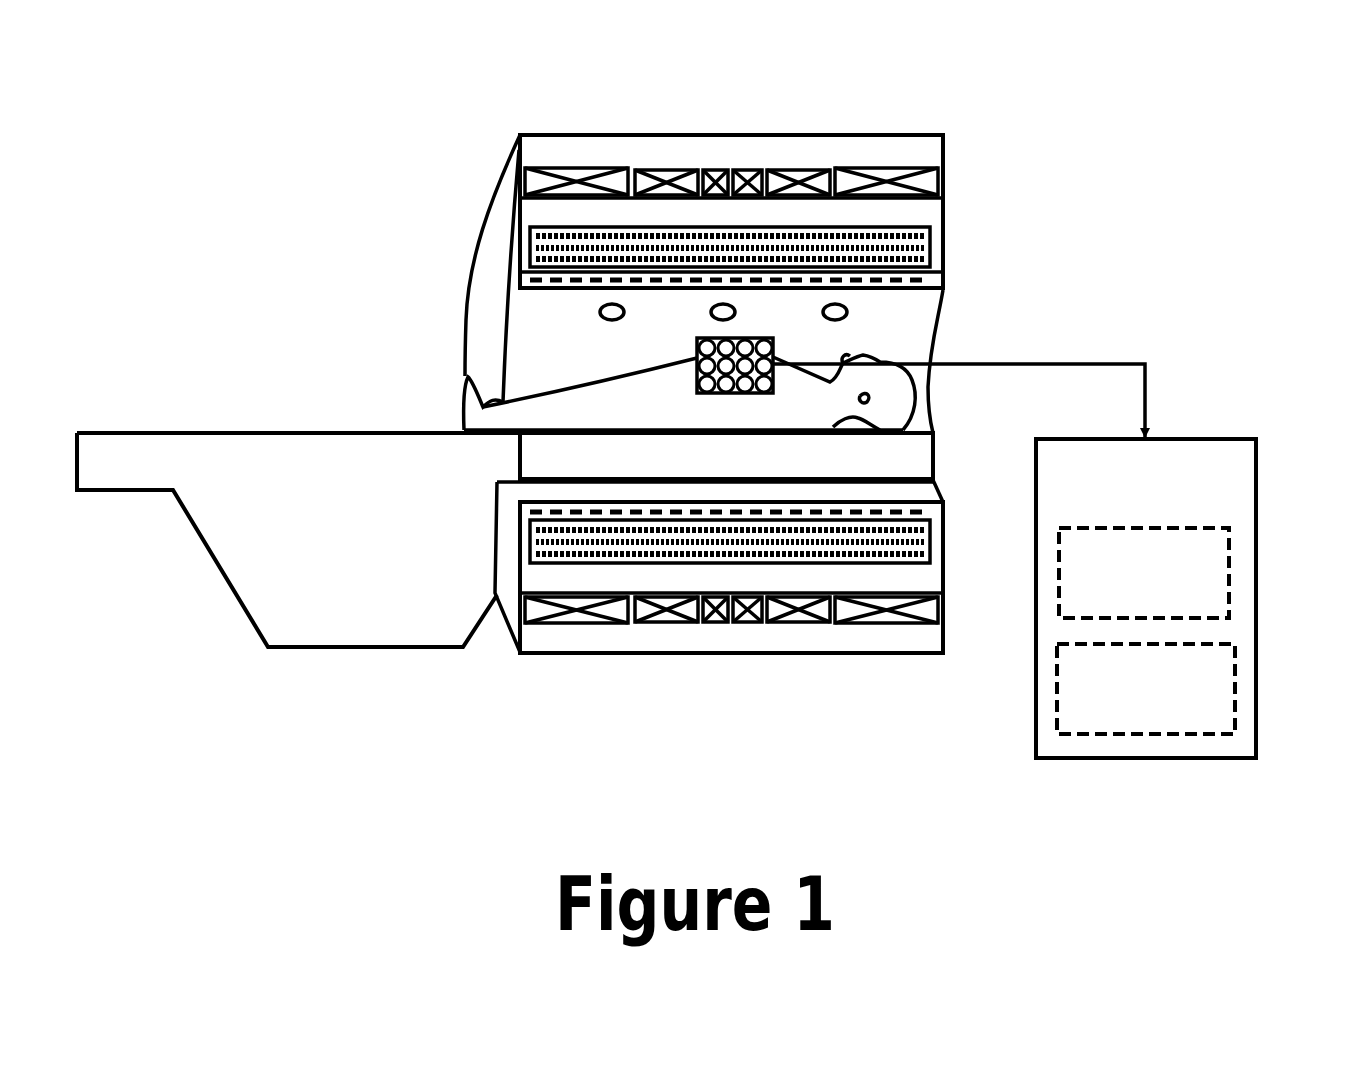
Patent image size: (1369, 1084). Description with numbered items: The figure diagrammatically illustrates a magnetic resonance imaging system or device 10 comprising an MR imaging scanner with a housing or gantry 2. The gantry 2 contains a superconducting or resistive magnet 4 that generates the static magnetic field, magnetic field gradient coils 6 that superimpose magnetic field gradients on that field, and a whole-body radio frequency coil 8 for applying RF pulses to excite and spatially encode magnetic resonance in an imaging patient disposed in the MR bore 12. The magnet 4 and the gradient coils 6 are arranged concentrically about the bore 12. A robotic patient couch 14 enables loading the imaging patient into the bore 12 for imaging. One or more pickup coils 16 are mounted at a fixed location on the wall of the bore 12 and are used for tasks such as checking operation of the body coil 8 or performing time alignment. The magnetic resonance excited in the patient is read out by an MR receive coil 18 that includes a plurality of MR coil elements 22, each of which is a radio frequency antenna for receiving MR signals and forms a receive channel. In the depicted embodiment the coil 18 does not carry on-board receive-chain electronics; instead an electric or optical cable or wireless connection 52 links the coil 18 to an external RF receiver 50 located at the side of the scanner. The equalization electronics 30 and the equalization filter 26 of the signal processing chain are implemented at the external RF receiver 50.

The housing or gantry 2 is at (893, 135).
The magnet 4 is at (882, 166).
The magnetic field gradient coils 6 is at (530, 260).
The whole-body radio frequency (RF) coil 8 is at (530, 279).
The magnetic resonance (MR) imaging system or device 10 is at (247, 117).
The MR bore 12 is at (592, 354).
The robotic patient couch 14 is at (268, 432).
The pickup coils 16 is at (848, 314).
The MR receive coil 18 is at (695, 342).
The MR coil elements 22 is at (773, 353).
The equalization filter 26 is at (1235, 695).
The equalization electronics 30 is at (1229, 573).
The external RF receiver 50 is at (1213, 439).
The electric or optical cable or wireless connection 52 is at (1107, 368).